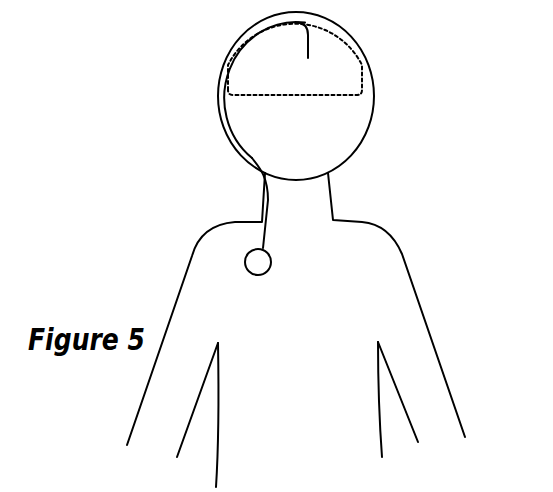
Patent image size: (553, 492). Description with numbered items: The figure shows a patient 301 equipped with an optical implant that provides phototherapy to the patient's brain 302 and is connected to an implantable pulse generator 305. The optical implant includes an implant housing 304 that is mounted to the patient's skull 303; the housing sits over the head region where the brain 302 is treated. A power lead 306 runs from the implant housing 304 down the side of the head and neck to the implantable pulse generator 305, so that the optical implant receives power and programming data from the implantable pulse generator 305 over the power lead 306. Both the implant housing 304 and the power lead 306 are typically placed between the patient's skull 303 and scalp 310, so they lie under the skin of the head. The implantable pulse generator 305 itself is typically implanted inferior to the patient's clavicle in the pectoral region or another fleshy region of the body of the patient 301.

The patient 301 is at (187, 232).
The brain 302 is at (337, 81).
The skull 303 is at (330, 31).
The implant housing 304 is at (250, 34).
The implantable pulse generator 305 is at (263, 261).
The power lead 306 is at (263, 204).
The scalp 310 is at (220, 78).